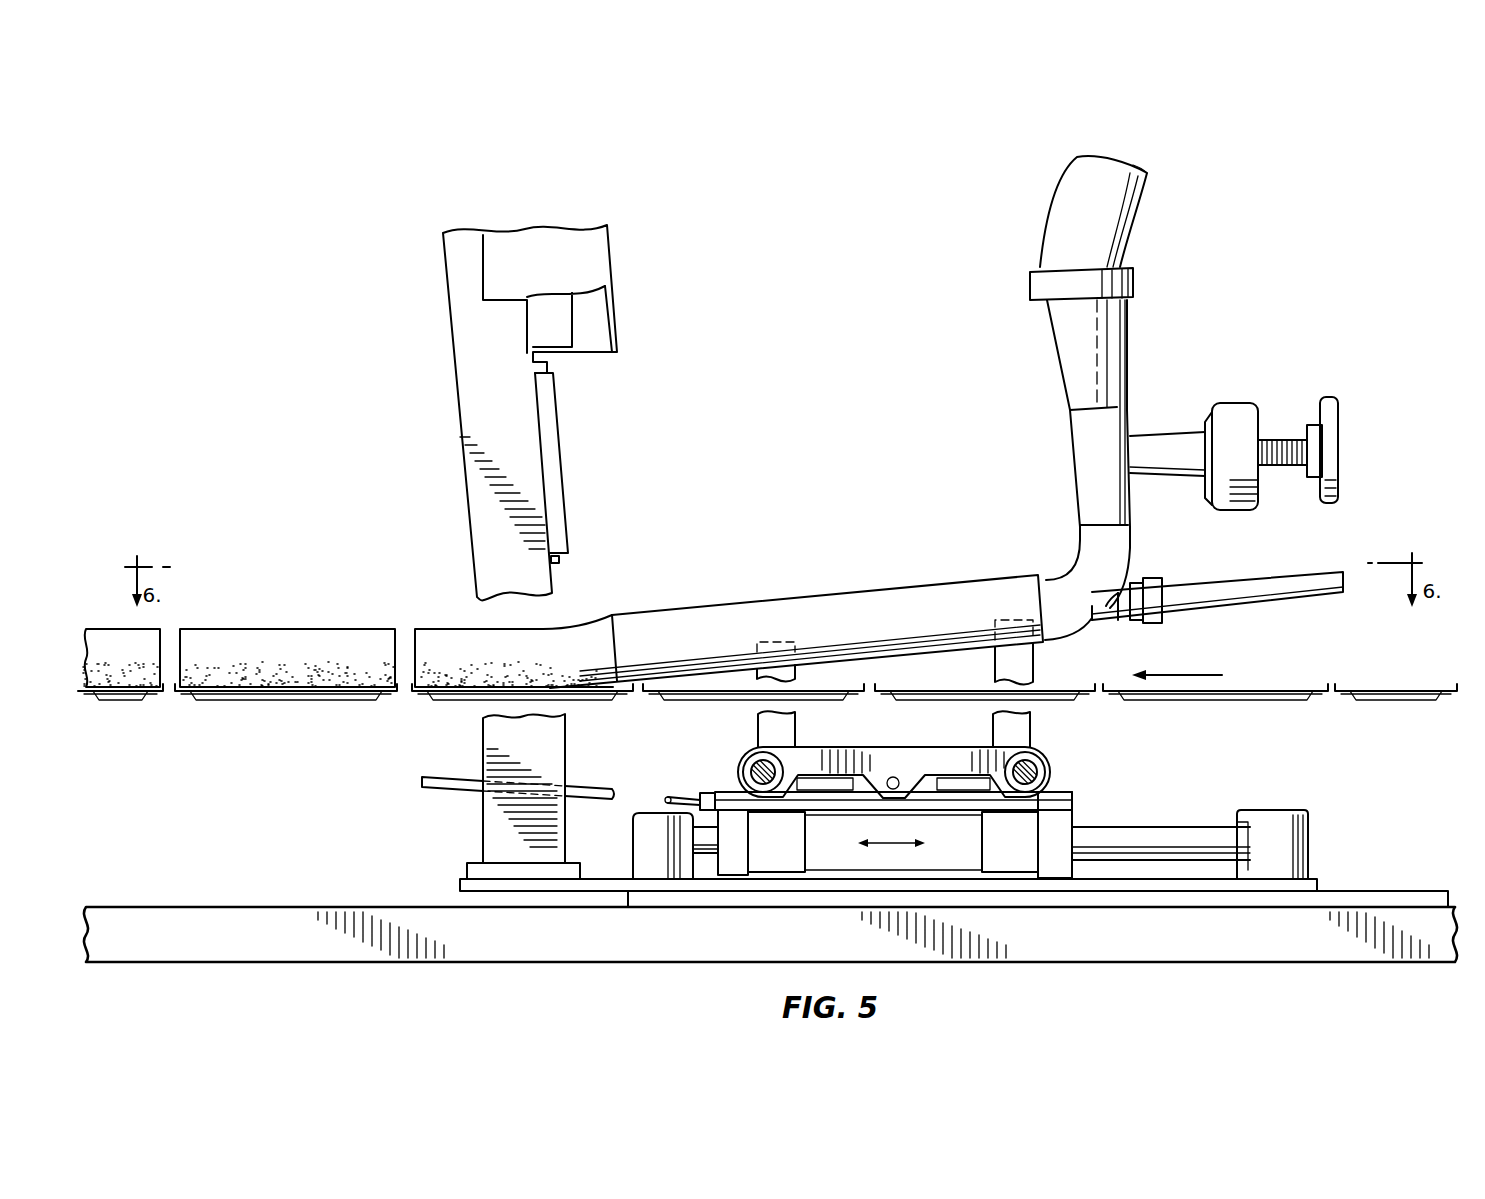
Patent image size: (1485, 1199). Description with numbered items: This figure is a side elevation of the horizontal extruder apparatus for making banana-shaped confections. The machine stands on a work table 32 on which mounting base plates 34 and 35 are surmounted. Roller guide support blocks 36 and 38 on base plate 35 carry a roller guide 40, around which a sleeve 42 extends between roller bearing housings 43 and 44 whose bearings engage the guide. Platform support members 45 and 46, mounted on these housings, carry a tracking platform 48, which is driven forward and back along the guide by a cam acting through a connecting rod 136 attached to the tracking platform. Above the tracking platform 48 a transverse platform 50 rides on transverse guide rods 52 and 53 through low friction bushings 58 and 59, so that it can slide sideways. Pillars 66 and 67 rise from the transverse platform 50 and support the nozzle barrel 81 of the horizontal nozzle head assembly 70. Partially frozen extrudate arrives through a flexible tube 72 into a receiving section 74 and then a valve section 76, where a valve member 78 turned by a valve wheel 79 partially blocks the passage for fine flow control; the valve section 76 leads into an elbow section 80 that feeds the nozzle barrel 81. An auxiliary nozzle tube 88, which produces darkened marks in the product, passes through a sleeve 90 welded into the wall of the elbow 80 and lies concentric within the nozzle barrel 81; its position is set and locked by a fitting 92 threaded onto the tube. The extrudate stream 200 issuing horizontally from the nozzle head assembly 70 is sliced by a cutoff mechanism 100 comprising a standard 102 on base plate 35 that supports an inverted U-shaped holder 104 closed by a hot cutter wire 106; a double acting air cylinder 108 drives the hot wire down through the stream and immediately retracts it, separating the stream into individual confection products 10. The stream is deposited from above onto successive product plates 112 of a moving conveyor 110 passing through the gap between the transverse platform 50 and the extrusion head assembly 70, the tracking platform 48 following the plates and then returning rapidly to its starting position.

The confection product 10 is at (148, 637).
The work table 32 is at (794, 946).
The mounting base plate 34 is at (1393, 893).
The mounting base plate 35 is at (1313, 880).
The roller guide support block 36 is at (1287, 833).
The roller guide support block 38 is at (650, 820).
The roller guide 40 is at (1200, 830).
The sleeve 42 is at (941, 846).
The roller bearing housing 43 is at (1001, 849).
The roller bearing housing 44 is at (766, 847).
The platform support member 45 is at (1050, 878).
The platform support member 46 is at (733, 867).
The tracking platform 48 is at (927, 861).
The transverse platform 50 is at (903, 755).
The transverse guide rod 52 is at (756, 760).
The transverse guide rod 53 is at (1043, 762).
The low friction bushing 58 is at (750, 772).
The low friction bushing 59 is at (1047, 777).
The pillar 66 is at (1020, 727).
The pillar 67 is at (782, 727).
The horizontal nozzle head assembly 70 is at (1156, 398).
The flexible tube 72 is at (1048, 221).
The receiving section 74 is at (1030, 292).
The valve section 76 is at (1070, 437).
The valve member 78 is at (1225, 405).
The valve wheel 79 is at (1320, 405).
The elbow section 80 is at (1112, 548).
The nozzle barrel 81 is at (866, 594).
The auxiliary nozzle tube 88 is at (1262, 582).
The sleeve 90 is at (1104, 612).
The Ultra-Torr fitting 92 is at (1152, 622).
The cutoff mechanism 100 is at (541, 413).
The standard 102 is at (470, 423).
The inverted U-shaped holder 104 is at (553, 440).
The hot cutter wire 106 is at (559, 560).
The double acting air cylinder 108 is at (557, 332).
The conveyor 110 is at (1292, 671).
The product plate 112 is at (277, 700).
The connecting rod 136 is at (445, 780).
The extrudate stream 200 is at (450, 640).